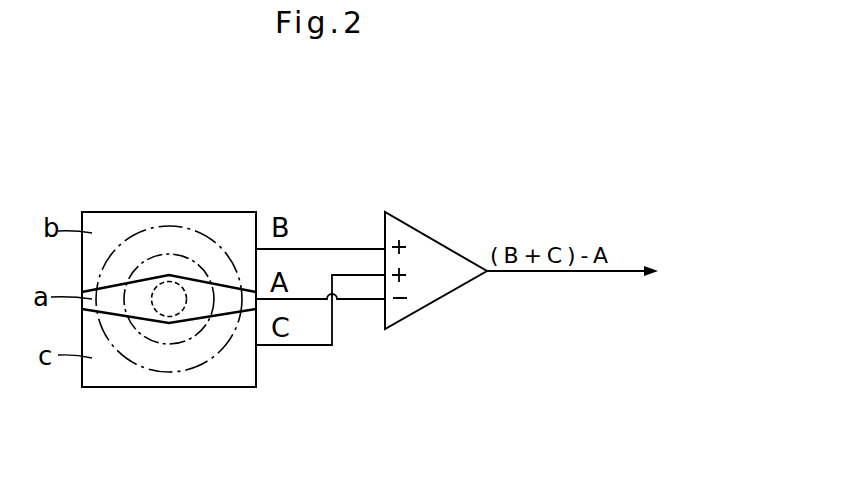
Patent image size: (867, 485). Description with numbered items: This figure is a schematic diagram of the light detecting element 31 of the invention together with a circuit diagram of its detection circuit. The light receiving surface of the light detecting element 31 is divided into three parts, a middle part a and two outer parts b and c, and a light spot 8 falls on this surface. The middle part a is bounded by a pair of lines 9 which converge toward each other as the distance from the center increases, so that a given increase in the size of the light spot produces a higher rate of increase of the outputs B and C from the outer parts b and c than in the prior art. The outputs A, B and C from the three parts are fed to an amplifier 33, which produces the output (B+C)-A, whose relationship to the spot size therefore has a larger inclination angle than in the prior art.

The light beam spot 8 is at (143, 260).
The pair of lines 9 is at (193, 320).
The light detecting element 31 is at (216, 182).
The differential amplifier 33 is at (418, 227).